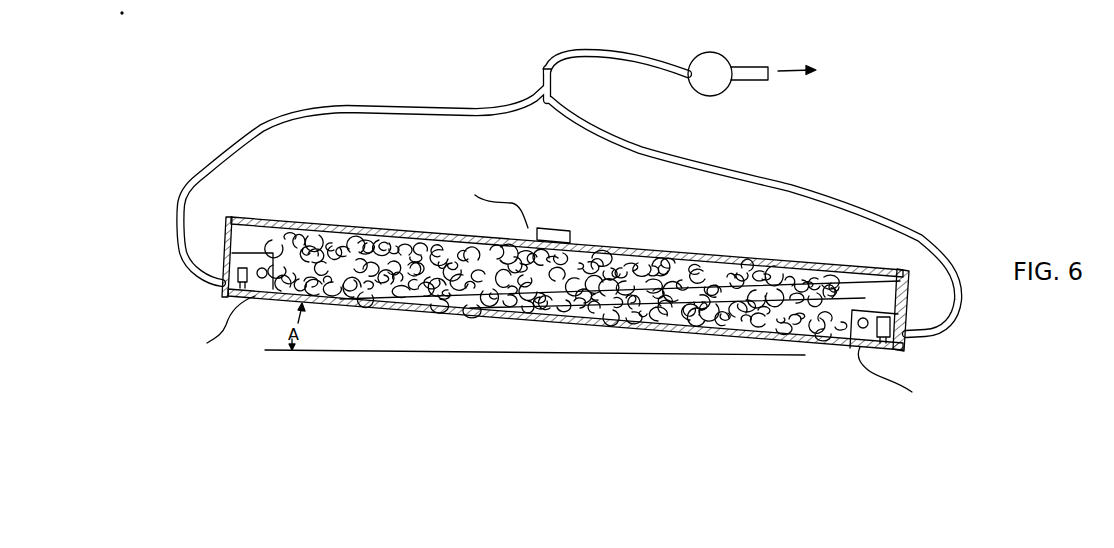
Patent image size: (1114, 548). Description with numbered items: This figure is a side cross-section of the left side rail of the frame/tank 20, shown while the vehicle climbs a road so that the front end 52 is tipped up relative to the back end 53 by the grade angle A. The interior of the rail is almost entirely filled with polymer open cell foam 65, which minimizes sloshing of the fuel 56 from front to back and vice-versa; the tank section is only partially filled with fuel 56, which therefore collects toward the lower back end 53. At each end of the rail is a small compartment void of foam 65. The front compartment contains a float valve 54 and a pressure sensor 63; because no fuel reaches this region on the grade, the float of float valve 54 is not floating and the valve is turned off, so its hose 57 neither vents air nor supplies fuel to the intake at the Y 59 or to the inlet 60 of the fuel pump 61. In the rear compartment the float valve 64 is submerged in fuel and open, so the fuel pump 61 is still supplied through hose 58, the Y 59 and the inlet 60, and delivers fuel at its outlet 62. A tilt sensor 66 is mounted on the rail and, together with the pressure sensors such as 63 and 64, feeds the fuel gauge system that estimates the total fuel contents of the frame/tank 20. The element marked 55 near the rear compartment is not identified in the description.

The frame/tank 20 is at (710, 233).
The front end 52 is at (240, 204).
The back end 53 is at (904, 263).
The float valve 54 is at (233, 297).
The valve compartment wiring 55 is at (860, 346).
The fuel 56 is at (776, 280).
The hose 57 is at (253, 120).
The hose 58 is at (833, 182).
The Y 59 is at (560, 84).
The inlet 60 is at (667, 62).
The fuel pump 61 is at (720, 100).
The outlet 62 is at (818, 74).
The pressure sensor 63 is at (266, 289).
The float valve 64 is at (846, 345).
The polymer open cell foam 65 is at (377, 235).
The tilt sensor 66 is at (557, 224).